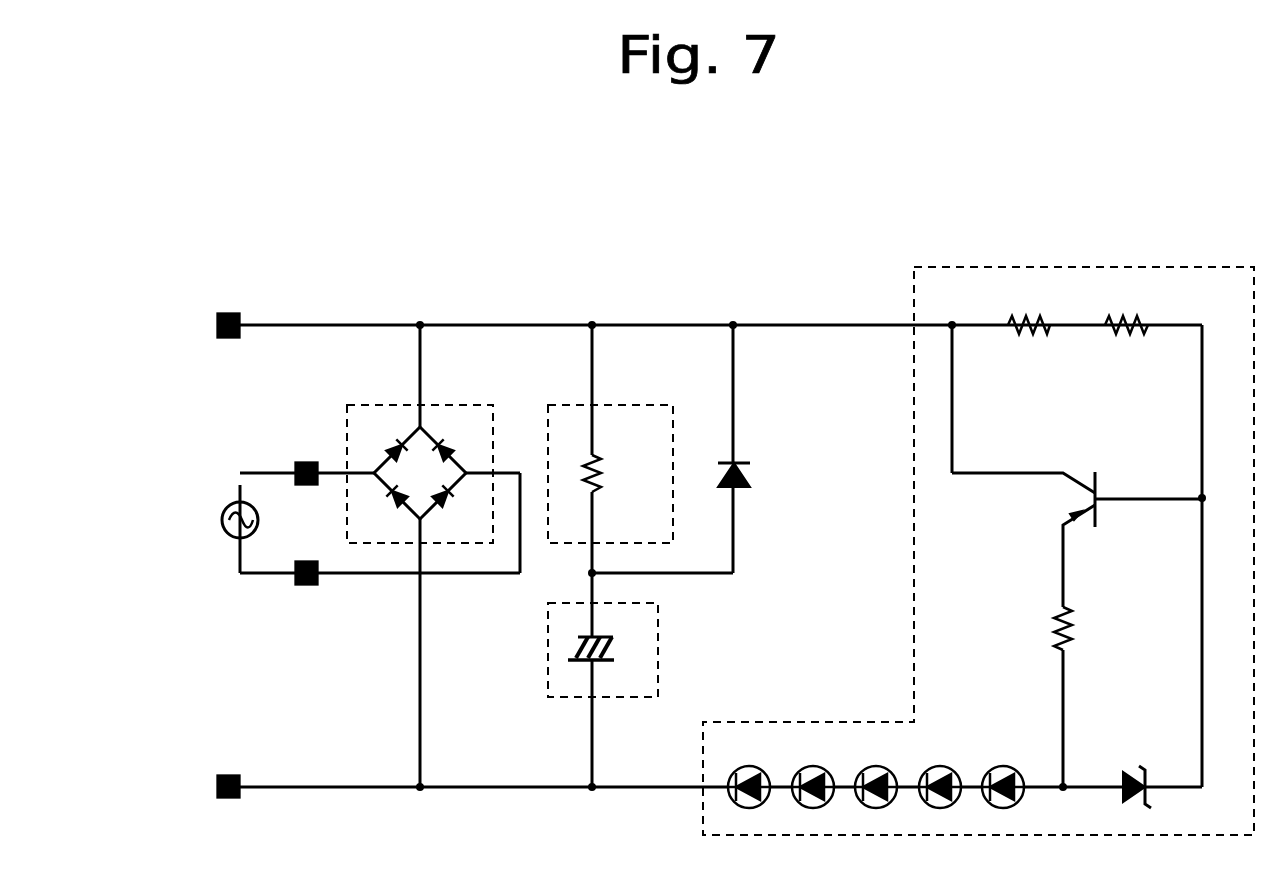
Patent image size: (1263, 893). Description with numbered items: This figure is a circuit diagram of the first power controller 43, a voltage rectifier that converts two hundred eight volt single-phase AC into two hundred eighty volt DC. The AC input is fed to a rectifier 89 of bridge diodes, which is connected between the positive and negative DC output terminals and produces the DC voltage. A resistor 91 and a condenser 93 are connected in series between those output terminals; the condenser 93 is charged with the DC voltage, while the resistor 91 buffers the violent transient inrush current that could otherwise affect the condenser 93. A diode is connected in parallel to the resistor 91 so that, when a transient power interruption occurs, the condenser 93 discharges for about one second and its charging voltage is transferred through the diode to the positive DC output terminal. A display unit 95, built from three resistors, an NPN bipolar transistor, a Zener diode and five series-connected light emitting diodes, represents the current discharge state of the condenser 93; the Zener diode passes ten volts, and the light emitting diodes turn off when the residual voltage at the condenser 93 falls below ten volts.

The first power controller 43 is at (1067, 160).
The rectifier 89 is at (452, 404).
The resistor 91 is at (633, 404).
The condenser 93 is at (658, 660).
The display unit 95 is at (1192, 267).